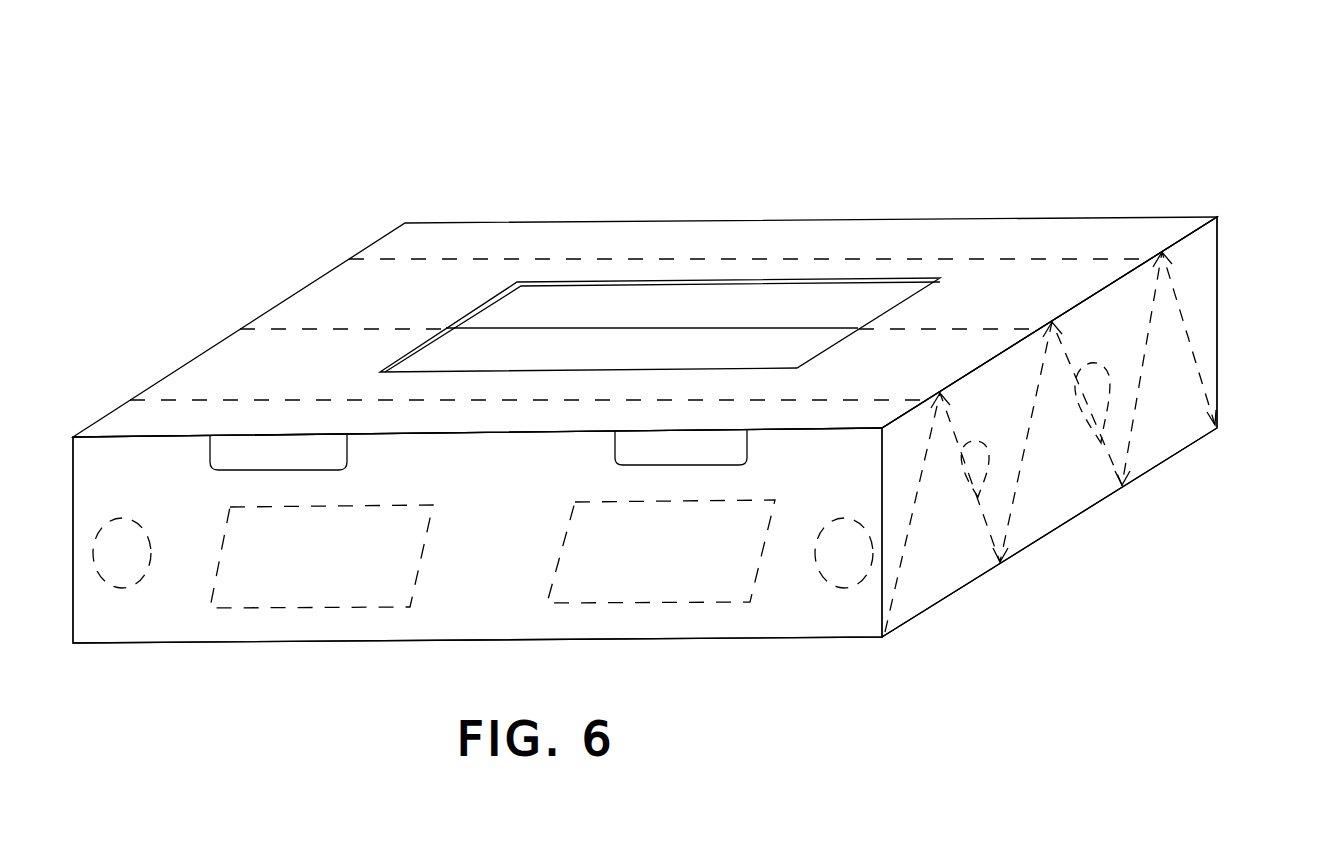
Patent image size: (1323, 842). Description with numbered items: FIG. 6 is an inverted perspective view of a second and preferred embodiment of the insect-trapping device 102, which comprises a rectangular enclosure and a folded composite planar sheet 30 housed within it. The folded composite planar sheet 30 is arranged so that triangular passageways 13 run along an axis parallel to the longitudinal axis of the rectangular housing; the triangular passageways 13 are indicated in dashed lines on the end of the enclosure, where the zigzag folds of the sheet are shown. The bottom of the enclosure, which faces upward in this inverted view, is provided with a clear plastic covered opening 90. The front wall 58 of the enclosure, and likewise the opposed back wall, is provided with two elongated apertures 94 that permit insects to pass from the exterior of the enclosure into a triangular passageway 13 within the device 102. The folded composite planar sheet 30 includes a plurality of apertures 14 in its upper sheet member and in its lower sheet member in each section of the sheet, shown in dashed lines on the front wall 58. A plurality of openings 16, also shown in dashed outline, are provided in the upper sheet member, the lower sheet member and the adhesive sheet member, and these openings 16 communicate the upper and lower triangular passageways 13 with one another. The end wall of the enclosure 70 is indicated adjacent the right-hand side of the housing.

The device 102 is at (987, 112).
The folded composite planar sheet 30 is at (1012, 283).
The side wall 70 is at (1207, 272).
The clear plastic covered opening 90 is at (462, 301).
The elongated aperture 94 is at (237, 448).
The opening 16 is at (120, 553).
The aperture 14 is at (313, 588).
The triangular passageway 13 is at (960, 570).
The front wall 58 is at (828, 620).